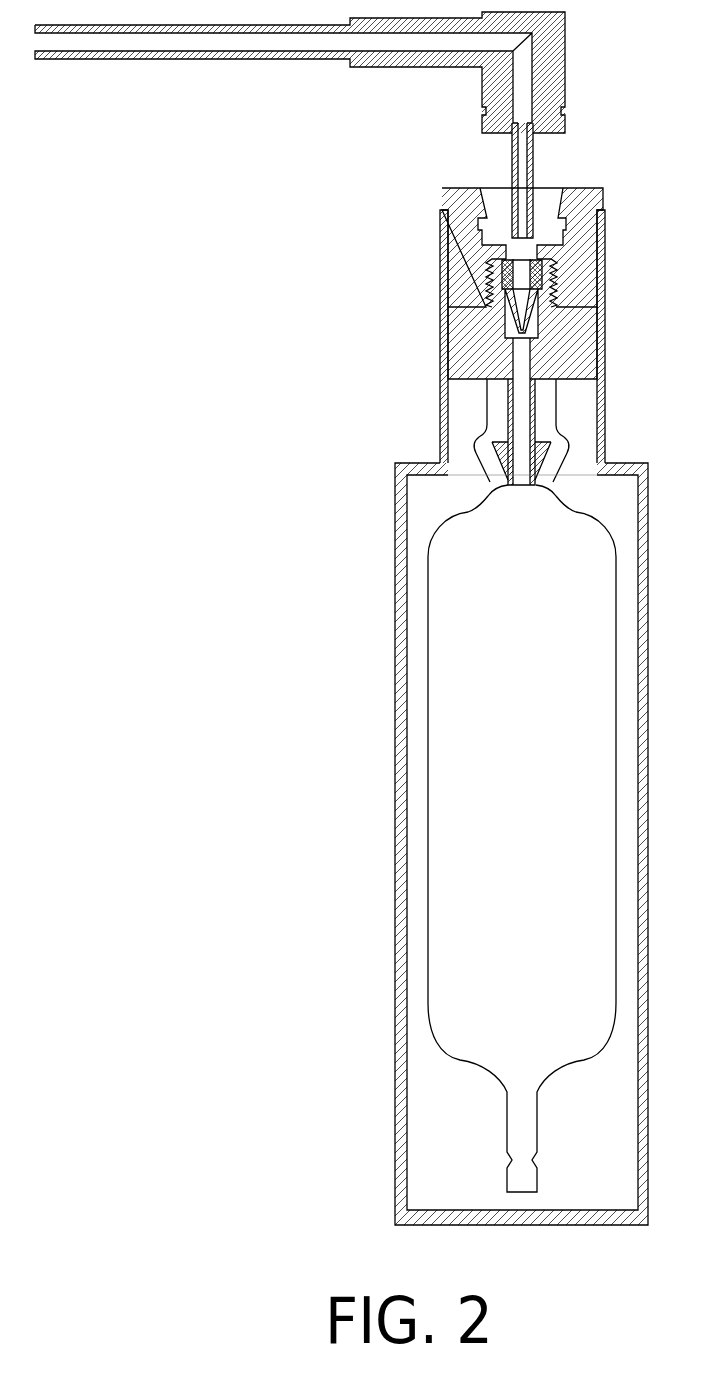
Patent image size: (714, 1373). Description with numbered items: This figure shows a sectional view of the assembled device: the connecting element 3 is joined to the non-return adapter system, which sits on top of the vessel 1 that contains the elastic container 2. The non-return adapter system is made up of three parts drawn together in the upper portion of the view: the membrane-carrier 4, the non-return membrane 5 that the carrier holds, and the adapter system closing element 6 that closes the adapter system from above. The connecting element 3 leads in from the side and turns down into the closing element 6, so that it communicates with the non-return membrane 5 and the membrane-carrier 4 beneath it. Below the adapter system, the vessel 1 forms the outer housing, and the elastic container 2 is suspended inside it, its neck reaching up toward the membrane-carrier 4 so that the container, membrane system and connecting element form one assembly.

The vessel 1 is at (397, 875).
The elastic container 2 is at (430, 660).
The connecting element 3 is at (243, 55).
The membrane-carrier 4 is at (463, 360).
The non-return membrane 5 is at (510, 303).
The adapter system closing element 6 is at (457, 243).